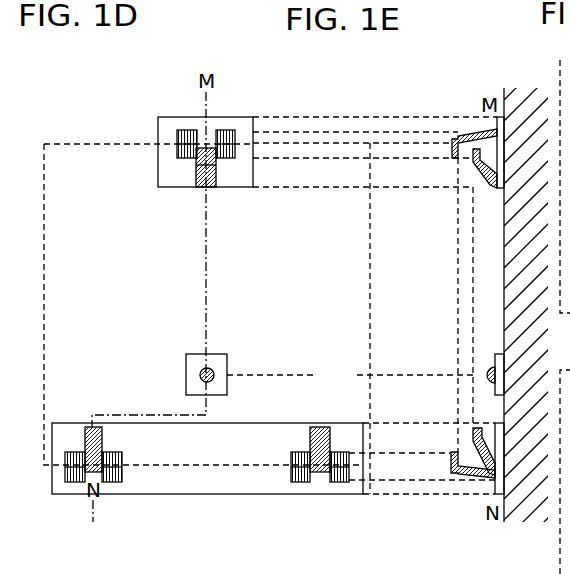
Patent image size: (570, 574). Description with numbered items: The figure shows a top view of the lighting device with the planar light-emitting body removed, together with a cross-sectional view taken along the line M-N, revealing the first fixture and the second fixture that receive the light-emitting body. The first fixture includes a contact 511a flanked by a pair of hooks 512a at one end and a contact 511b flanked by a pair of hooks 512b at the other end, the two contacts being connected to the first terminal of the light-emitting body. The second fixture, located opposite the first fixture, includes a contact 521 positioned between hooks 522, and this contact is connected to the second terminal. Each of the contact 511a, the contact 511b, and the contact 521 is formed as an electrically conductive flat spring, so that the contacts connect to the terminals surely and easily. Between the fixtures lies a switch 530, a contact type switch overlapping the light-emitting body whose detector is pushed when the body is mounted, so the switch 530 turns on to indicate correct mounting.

In FIG. 1D, the hooks 522 is at (185, 130).
In FIG. 1E, the hooks 522 is at (463, 138).
In FIG. 1D, the contact 521 is at (213, 190).
In FIG. 1E, the contact 521 is at (487, 168).
In FIG. 1D, the switch 530 is at (227, 354).
In FIG. 1E, the switch 530 is at (490, 368).
In FIG. 1D, the contact 511a is at (97, 428).
In FIG. 1E, the contact 511a is at (476, 433).
In FIG. 1D, the contact 511b is at (325, 428).
In FIG. 1D, the hooks 512a is at (73, 483).
In FIG. 1E, the hooks 512a is at (470, 480).
In FIG. 1D, the hooks 512b is at (298, 483).